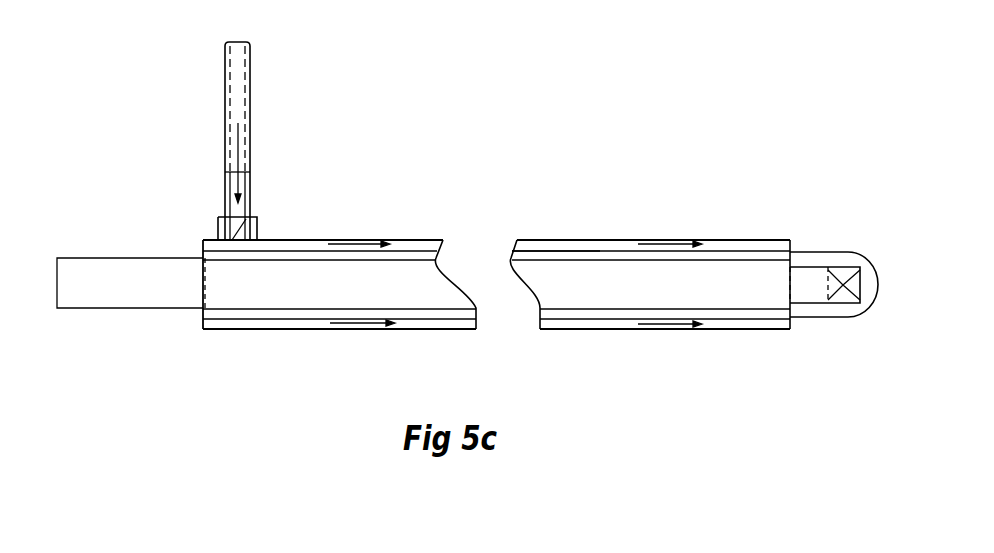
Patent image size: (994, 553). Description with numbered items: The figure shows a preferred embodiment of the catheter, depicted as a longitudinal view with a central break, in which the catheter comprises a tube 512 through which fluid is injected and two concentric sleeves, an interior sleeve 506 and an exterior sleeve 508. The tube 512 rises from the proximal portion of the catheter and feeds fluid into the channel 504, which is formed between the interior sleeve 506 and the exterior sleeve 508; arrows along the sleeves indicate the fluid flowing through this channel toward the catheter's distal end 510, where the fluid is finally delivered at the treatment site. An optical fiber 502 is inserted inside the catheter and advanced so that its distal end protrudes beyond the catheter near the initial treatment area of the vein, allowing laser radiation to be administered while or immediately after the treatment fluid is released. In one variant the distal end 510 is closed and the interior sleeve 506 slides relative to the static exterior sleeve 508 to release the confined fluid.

The optical fiber 502 is at (665, 294).
The channel 504 is at (415, 235).
The interior sleeve 506 is at (539, 244).
The exterior sleeve 508 is at (589, 235).
The catheter's distal end 510 is at (794, 310).
The tube 512 is at (259, 124).